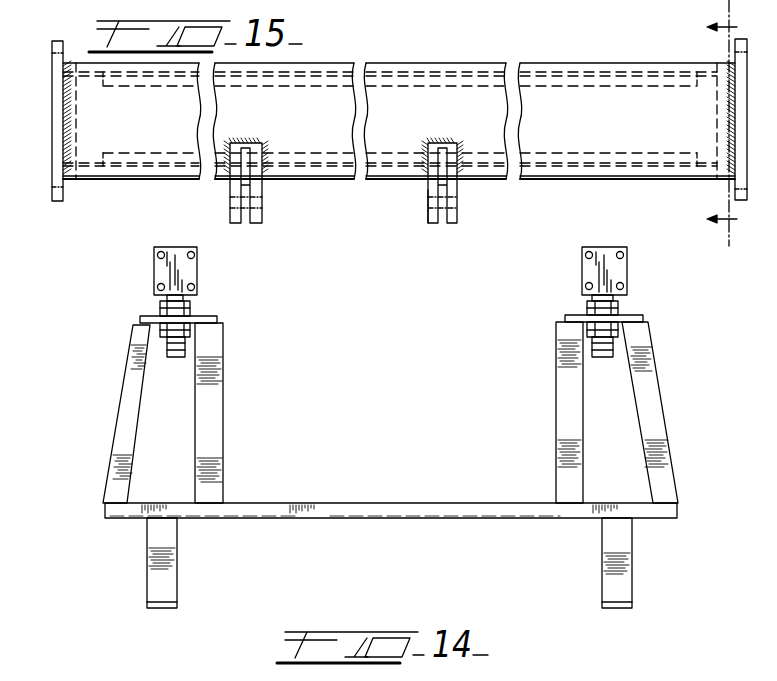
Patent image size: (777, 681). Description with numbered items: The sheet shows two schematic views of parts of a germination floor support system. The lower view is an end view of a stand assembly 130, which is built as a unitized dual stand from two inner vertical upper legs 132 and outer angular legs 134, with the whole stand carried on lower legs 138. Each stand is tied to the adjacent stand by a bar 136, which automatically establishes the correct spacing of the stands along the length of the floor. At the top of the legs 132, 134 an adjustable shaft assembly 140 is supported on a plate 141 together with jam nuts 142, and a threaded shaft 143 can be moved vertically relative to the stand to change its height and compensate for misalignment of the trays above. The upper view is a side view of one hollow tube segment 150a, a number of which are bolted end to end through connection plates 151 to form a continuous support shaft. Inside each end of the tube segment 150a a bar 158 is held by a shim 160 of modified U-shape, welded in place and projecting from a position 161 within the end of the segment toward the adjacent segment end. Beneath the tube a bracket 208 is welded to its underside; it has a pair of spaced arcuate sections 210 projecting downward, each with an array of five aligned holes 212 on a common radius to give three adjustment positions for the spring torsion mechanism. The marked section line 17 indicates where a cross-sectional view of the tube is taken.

In FIG. 15, the tube segment 150a is at (594, 93).
In FIG. 15, the connection plate 151 is at (52, 146).
In FIG. 14, the connection plate 151 is at (161, 248).
In FIG. 15, the bar 158 is at (101, 107).
In FIG. 15, the position within the end of the tube segment 161 is at (102, 82).
In FIG. 15, the shim 160 is at (650, 160).
In FIG. 15, the bracket 208 is at (267, 201).
In FIG. 15, the arcuate sections 210 is at (458, 192).
In FIG. 15, the aligned holes 212 is at (428, 200).
In FIG. 15, the section line 17- 17 is at (733, 125).
In FIG. 14, the bar 136 is at (370, 503).
In FIG. 14, the lower legs 138 is at (177, 548).
In FIG. 14, the inner vertical upper legs 132 is at (212, 373).
In FIG. 14, the outer angular legs 134 is at (134, 412).
In FIG. 14, the stand assembly 130 is at (224, 445).
In FIG. 14, the plate 141 is at (214, 321).
In FIG. 14, the jam nuts 142 is at (194, 304).
In FIG. 14, the threaded shaft 143 is at (179, 346).
In FIG. 14, the adjustable shaft assembly 140 is at (180, 360).